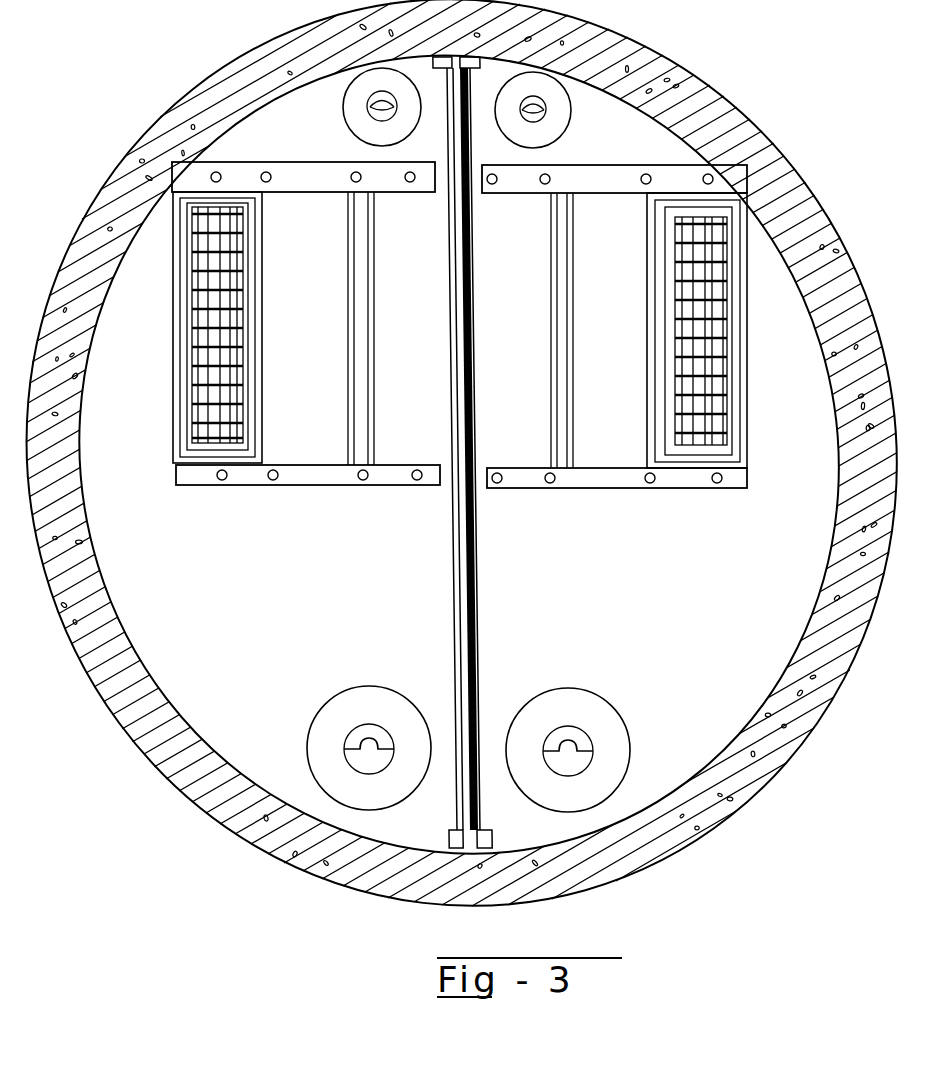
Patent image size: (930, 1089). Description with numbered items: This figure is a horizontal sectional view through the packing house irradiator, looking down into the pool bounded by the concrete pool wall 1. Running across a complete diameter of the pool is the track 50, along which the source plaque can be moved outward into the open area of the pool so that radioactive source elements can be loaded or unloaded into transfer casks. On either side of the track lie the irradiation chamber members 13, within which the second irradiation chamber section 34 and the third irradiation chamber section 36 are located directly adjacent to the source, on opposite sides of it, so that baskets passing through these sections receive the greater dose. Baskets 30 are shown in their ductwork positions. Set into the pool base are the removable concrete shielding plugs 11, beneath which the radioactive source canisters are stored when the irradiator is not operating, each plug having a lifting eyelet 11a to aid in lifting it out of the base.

The pool wall 1 is at (332, 862).
The shielding plug 11 is at (559, 116).
The lifting eyelet 11a is at (543, 115).
The irradiation chamber member 13 is at (614, 351).
The basket 30 is at (703, 423).
The second irradiation chamber section 34 is at (403, 463).
The third irradiation chamber section 36 is at (528, 470).
The track 50 is at (469, 658).